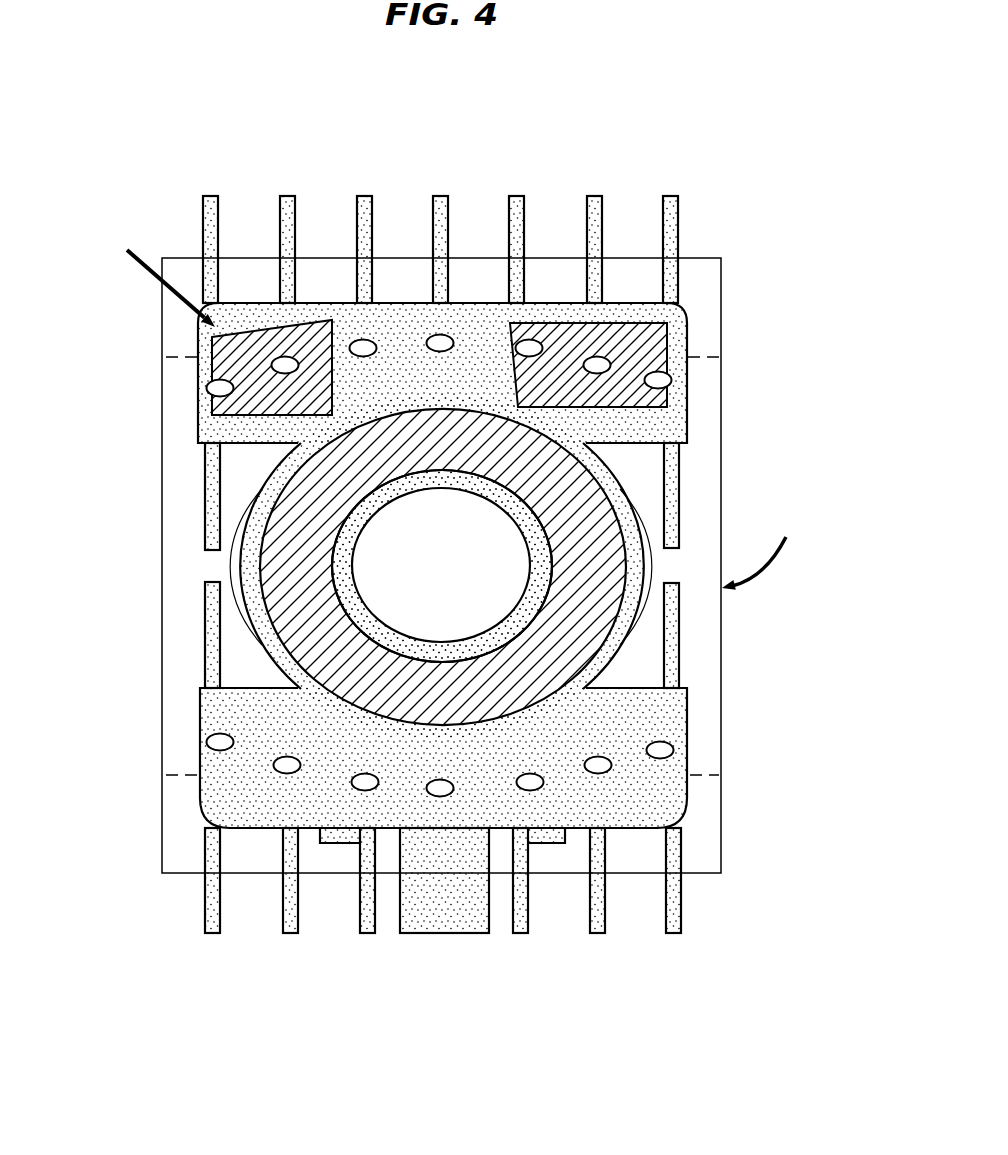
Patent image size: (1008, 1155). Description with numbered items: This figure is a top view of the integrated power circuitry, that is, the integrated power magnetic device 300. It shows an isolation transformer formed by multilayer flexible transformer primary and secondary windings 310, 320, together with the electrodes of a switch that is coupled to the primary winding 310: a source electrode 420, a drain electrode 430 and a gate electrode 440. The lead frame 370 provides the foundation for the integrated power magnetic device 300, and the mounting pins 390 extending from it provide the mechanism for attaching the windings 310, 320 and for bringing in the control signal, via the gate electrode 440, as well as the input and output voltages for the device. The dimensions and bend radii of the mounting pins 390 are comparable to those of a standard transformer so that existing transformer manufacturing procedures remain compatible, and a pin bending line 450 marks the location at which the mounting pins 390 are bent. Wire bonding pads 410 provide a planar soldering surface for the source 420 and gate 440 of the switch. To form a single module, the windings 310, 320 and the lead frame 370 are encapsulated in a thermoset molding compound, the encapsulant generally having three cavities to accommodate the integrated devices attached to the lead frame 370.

The integrated power magnetic device 300 is at (139, 138).
The primary winding 310 is at (200, 712).
The secondary winding 320 is at (200, 336).
The lead frame 370 is at (205, 522).
The mounting pins 390 is at (678, 228).
The wire bonding pads 410 is at (567, 832).
The source electrode 420 is at (375, 918).
The drain electrode 430 is at (475, 933).
The gate electrode 440 is at (528, 920).
The pin bending line 450 is at (704, 772).